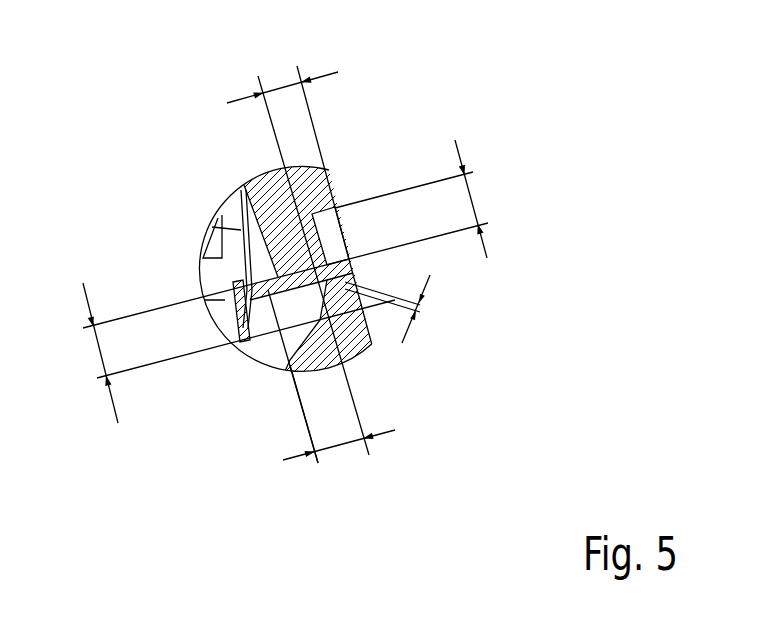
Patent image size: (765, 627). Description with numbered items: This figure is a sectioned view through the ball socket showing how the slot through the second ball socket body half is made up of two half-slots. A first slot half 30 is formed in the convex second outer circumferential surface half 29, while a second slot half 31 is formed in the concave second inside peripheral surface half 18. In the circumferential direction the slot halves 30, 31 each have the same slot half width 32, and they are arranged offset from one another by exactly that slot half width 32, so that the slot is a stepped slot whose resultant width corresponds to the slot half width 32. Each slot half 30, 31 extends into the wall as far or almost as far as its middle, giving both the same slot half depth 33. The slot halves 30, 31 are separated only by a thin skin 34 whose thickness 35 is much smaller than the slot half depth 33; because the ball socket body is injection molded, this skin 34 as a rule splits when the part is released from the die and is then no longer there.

The second inside peripheral surface half 18 is at (235, 207).
The second outer circumferential surface half 29 is at (372, 318).
The first slot half 30 is at (328, 232).
The second slot half 31 is at (302, 298).
The slot half width 32 is at (485, 249).
The slot half depth 33 is at (230, 102).
The skin 34 is at (345, 246).
The thickness 35 is at (428, 275).